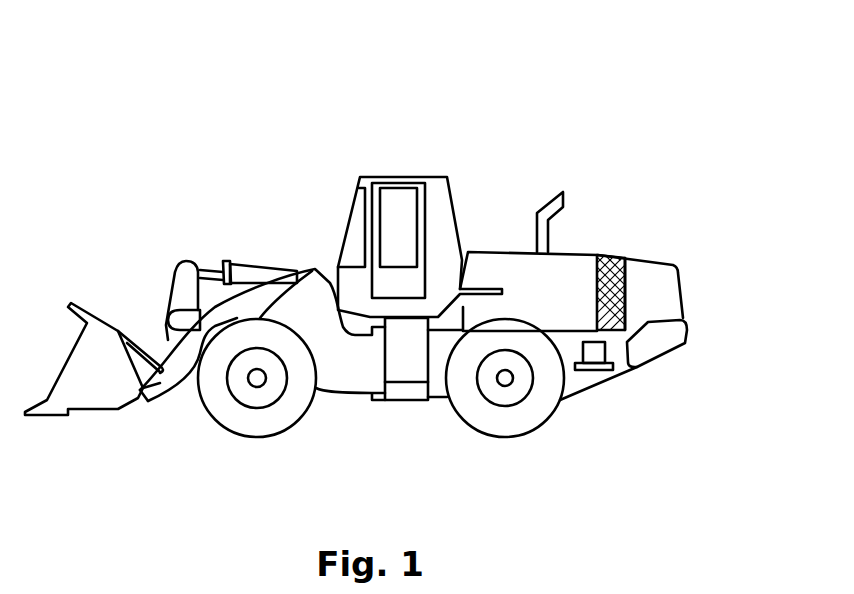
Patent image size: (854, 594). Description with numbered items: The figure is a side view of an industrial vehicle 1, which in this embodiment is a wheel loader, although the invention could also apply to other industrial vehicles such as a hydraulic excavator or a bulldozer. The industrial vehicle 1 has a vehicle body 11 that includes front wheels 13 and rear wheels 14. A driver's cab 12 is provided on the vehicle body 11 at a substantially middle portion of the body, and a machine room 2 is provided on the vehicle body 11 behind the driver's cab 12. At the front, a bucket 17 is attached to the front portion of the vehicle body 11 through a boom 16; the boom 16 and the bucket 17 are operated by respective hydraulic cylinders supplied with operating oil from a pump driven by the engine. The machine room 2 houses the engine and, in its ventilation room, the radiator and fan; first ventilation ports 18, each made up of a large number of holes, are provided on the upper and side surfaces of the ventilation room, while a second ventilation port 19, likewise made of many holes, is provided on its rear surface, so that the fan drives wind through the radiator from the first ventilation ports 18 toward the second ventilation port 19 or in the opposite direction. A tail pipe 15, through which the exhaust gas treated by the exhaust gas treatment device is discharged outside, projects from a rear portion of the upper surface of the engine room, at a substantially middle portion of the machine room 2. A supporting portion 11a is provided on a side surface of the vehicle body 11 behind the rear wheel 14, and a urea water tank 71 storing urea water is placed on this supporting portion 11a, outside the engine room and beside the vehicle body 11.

The industrial vehicle 1 is at (257, 123).
The machine room 2 is at (558, 278).
The vehicle body 11 is at (355, 360).
The supporting portion 11a is at (598, 367).
The driver's cab 12 is at (397, 176).
The front wheels 13 is at (255, 425).
The rear wheels 14 is at (500, 423).
The tail pipe 15 is at (553, 193).
The boom 16 is at (213, 315).
The bucket 17 is at (98, 338).
The first ventilation ports 18 is at (625, 283).
The second ventilation port 19 is at (680, 285).
The urea water tank 71 is at (592, 353).